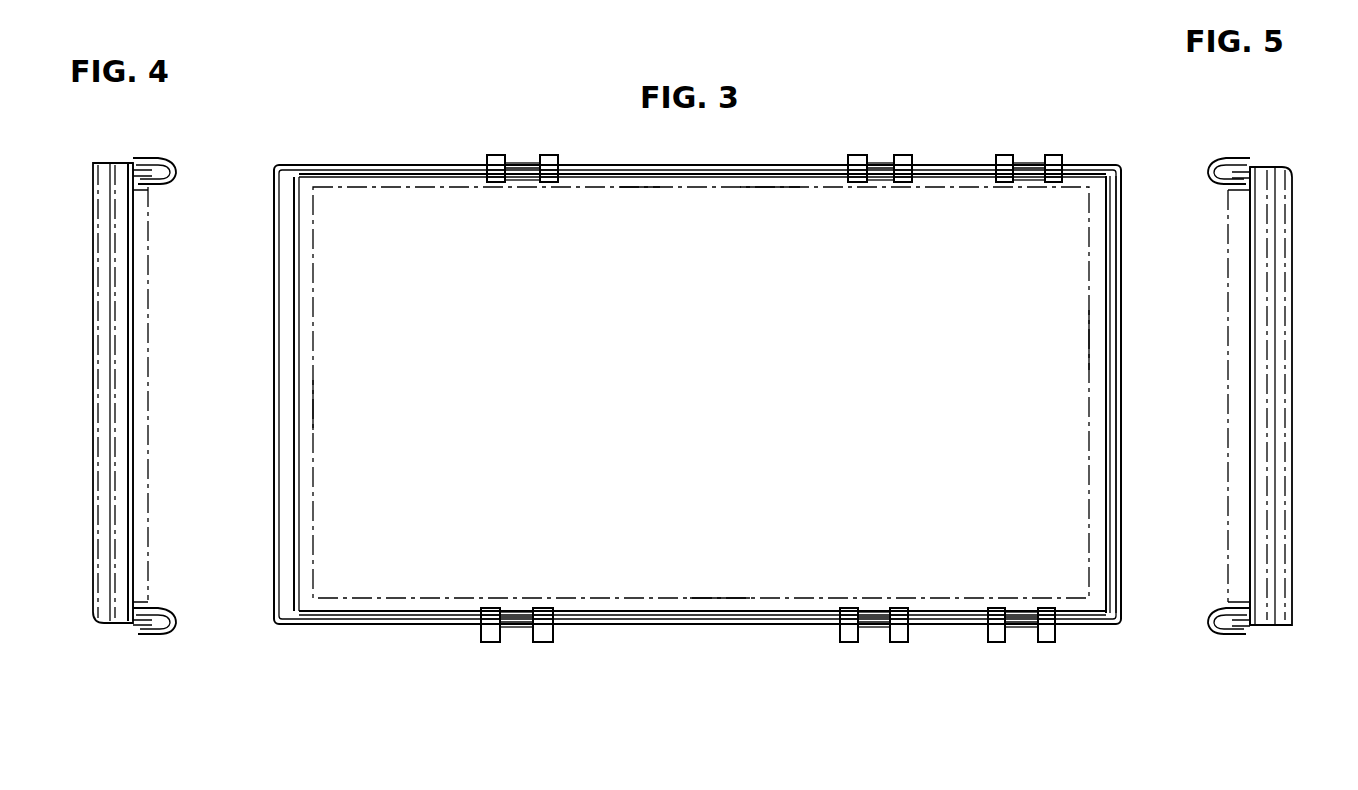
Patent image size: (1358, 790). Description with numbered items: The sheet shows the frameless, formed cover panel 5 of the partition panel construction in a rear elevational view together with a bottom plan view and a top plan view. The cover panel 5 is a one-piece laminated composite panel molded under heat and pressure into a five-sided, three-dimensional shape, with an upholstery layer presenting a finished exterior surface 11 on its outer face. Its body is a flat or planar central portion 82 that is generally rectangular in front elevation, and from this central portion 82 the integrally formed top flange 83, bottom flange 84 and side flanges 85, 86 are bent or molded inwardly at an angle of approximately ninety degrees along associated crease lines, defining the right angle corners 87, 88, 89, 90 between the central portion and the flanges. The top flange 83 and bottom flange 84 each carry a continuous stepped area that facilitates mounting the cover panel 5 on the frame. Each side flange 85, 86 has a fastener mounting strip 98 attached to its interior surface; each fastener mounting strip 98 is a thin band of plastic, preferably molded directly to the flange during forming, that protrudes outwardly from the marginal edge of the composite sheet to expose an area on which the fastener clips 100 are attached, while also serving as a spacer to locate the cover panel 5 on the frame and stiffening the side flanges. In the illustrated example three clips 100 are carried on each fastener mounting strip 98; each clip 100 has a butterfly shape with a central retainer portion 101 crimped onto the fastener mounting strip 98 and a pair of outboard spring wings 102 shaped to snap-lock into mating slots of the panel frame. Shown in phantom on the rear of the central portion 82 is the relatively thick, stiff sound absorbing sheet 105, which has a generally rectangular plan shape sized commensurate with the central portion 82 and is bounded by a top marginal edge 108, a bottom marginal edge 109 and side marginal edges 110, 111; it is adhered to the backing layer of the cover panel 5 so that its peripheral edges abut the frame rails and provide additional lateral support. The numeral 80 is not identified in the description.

In FIG. 3, the cover panel 5 is at (1080, 166).
In FIG. 4, the cover panel 5 is at (100, 163).
In FIG. 5, the cover panel 5 is at (1293, 170).
In FIG. 4, the finished exterior surface 11 is at (92, 400).
In FIG. 5, the frame side member 80 is at (1268, 626).
In FIG. 3, the central portion 82 is at (751, 401).
In FIG. 4, the central portion 82 is at (95, 300).
In FIG. 5, the central portion 82 is at (1293, 360).
In FIG. 3, the top flange 83 is at (1122, 172).
In FIG. 4, the bottom flange 84 is at (128, 284).
In FIG. 3, the side flange 85 is at (730, 165).
In FIG. 4, the side flange 85 is at (113, 163).
In FIG. 5, the side flange 85 is at (1265, 167).
In FIG. 3, the side flange 86 is at (777, 625).
In FIG. 4, the side flange 86 is at (103, 624).
In FIG. 3, the right angle corner 87 is at (1113, 168).
In FIG. 3, the right angle corner 88 is at (1110, 628).
In FIG. 3, the right angle corner 89 is at (283, 166).
In FIG. 3, the right angle corner 90 is at (278, 622).
In FIG. 3, the fastener mounting strip 98 is at (470, 180).
In FIG. 4, the fastener mounting strip 98 is at (152, 176).
In FIG. 5, the fastener mounting strip 98 is at (1238, 160).
In FIG. 3, the fastener clip 100 is at (552, 156).
In FIG. 4, the fastener clip 100 is at (172, 167).
In FIG. 5, the fastener clip 100 is at (1212, 180).
In FIG. 3, the central retainer portion 101 is at (524, 181).
In FIG. 4, the central retainer portion 101 is at (142, 163).
In FIG. 5, the central retainer portion 101 is at (1258, 165).
In FIG. 4, the spring wing 102 is at (163, 160).
In FIG. 5, the spring wing 102 is at (1215, 160).
In FIG. 3, the sound absorbing sheet 105 is at (638, 187).
In FIG. 4, the sound absorbing sheet 105 is at (152, 425).
In FIG. 5, the sound absorbing sheet 105 is at (1228, 440).
In FIG. 3, the top marginal edge 108 is at (1087, 342).
In FIG. 5, the top marginal edge 108 is at (1228, 300).
In FIG. 3, the bottom marginal edge 109 is at (316, 405).
In FIG. 4, the bottom marginal edge 109 is at (148, 362).
In FIG. 3, the side marginal edge 110 is at (772, 190).
In FIG. 3, the side marginal edge 111 is at (722, 598).